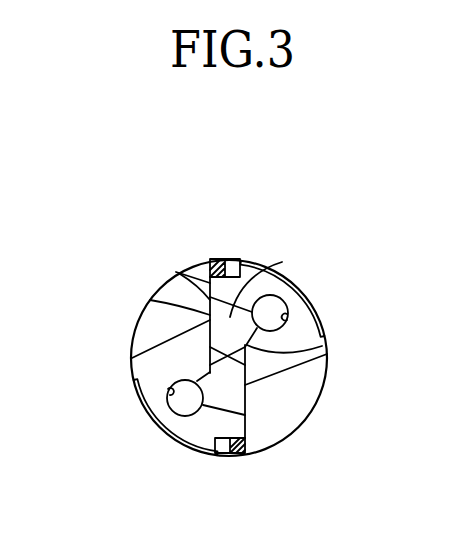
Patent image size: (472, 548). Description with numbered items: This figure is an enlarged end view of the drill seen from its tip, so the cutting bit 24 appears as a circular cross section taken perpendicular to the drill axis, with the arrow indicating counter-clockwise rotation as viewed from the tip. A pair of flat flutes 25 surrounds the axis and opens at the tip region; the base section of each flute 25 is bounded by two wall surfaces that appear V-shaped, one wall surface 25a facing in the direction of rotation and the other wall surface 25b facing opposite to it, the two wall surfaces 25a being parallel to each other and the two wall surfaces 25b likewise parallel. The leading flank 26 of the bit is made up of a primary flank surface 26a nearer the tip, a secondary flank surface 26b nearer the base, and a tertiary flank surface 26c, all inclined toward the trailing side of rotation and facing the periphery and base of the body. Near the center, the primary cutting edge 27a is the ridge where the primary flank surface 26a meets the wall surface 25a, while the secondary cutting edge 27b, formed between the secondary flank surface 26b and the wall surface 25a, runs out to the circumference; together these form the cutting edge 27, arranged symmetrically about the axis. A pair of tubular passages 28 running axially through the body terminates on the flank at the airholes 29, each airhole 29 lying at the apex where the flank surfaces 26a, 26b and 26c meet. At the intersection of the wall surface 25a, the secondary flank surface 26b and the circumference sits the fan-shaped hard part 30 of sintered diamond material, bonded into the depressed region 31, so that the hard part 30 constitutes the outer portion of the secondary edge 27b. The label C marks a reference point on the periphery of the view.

The cutting bit 24 is at (143, 419).
The flute 25 is at (150, 332).
The wall surface 25a is at (254, 428).
The wall surface 25b is at (295, 380).
The leading flank 26 is at (427, 218).
The primary flank surface 26a is at (268, 276).
The secondary flank surface 26b is at (283, 287).
The tertiary flank surface 26c is at (303, 332).
The cutting edge 27 is at (101, 255).
The primary cutting edge 27a is at (150, 300).
The secondary cutting edge 27b is at (176, 272).
The tubular passage 28 is at (172, 416).
The airhole 29 is at (290, 312).
The hard part 30 is at (222, 258).
The depressed region 31 is at (227, 250).
The center C is at (330, 343).